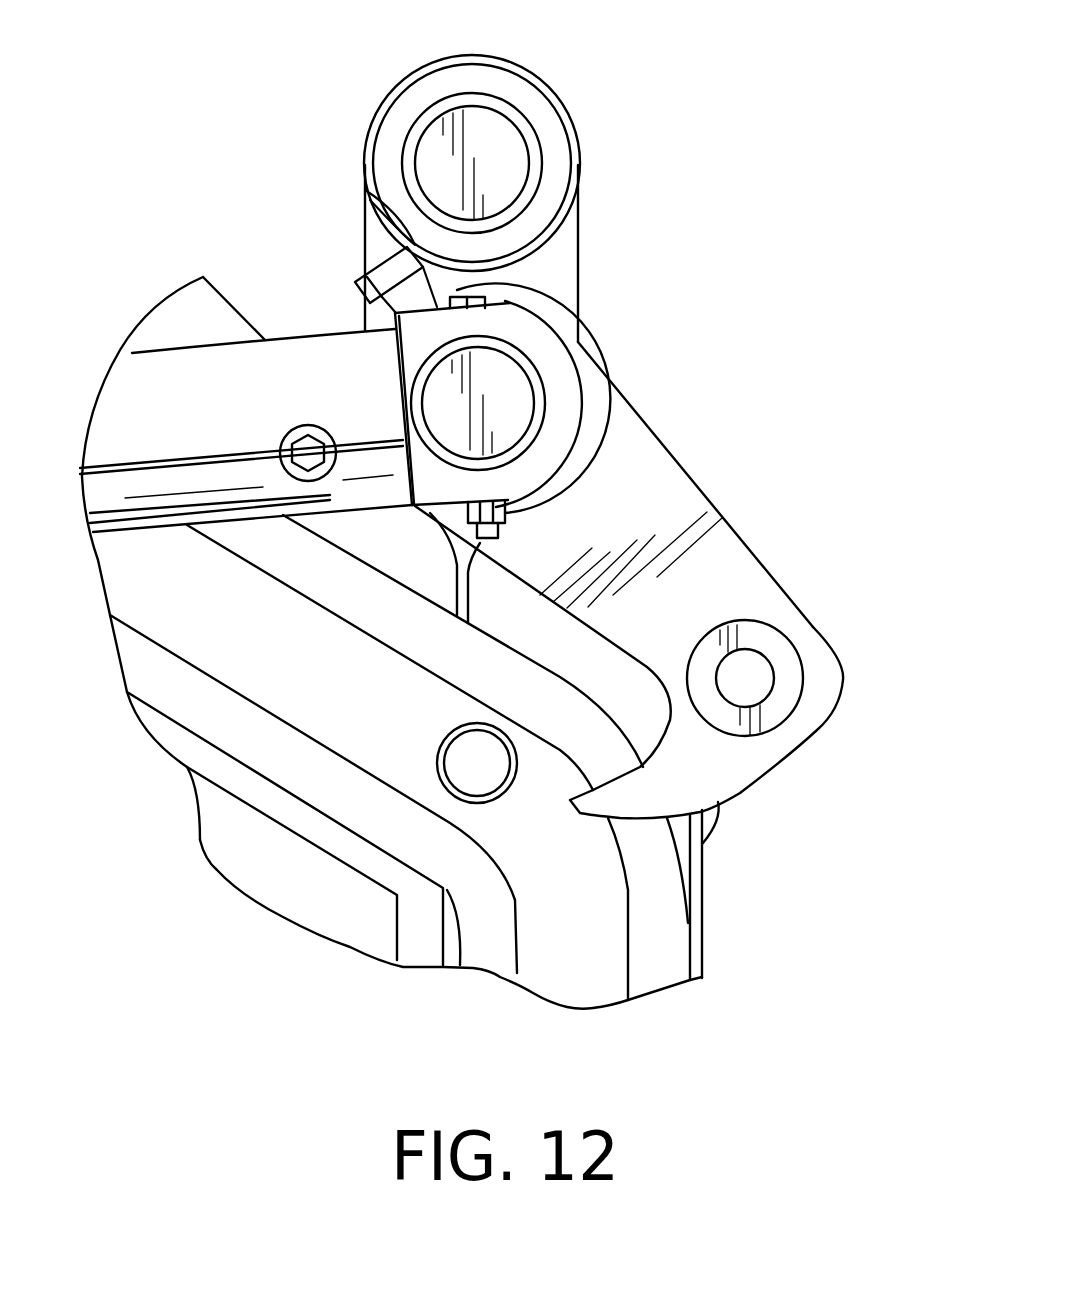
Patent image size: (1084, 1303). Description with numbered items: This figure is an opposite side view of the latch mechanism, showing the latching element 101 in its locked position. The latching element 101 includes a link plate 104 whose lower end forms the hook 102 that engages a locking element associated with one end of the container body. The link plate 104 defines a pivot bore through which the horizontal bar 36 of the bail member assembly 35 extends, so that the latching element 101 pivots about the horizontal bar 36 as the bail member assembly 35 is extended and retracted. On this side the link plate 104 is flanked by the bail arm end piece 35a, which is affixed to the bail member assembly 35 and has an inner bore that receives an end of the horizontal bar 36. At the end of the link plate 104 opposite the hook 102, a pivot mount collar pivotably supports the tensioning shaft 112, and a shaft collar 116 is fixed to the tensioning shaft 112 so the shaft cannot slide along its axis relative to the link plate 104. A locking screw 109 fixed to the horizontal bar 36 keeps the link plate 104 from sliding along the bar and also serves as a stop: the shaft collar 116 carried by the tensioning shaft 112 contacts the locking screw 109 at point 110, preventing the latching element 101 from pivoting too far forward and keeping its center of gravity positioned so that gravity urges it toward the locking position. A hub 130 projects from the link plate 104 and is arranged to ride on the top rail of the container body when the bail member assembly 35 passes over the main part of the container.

The bail member assembly 35 is at (192, 370).
The bail arm end piece 35a is at (543, 345).
The horizontal bar 36 is at (510, 383).
The latching element 101 is at (752, 542).
The hook 102 is at (712, 775).
The link plate 104 is at (665, 485).
The locking screw 109 is at (378, 272).
The contact point 110 is at (366, 193).
The tensioning shaft 112 is at (500, 132).
The shaft collar 116 is at (392, 120).
The hub 130 is at (770, 640).